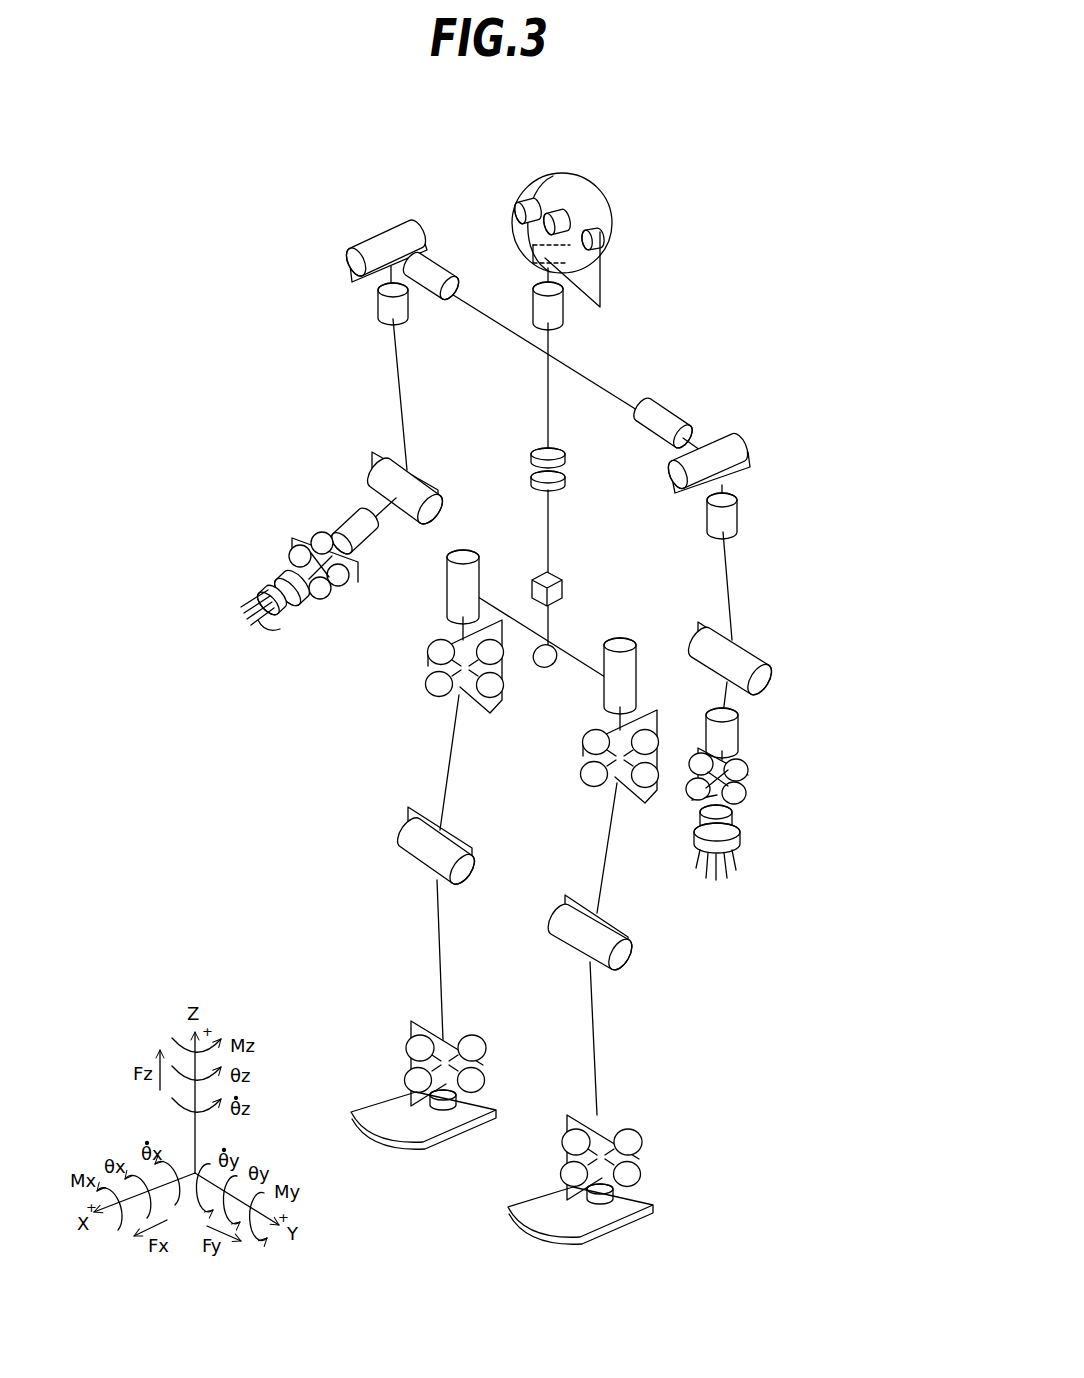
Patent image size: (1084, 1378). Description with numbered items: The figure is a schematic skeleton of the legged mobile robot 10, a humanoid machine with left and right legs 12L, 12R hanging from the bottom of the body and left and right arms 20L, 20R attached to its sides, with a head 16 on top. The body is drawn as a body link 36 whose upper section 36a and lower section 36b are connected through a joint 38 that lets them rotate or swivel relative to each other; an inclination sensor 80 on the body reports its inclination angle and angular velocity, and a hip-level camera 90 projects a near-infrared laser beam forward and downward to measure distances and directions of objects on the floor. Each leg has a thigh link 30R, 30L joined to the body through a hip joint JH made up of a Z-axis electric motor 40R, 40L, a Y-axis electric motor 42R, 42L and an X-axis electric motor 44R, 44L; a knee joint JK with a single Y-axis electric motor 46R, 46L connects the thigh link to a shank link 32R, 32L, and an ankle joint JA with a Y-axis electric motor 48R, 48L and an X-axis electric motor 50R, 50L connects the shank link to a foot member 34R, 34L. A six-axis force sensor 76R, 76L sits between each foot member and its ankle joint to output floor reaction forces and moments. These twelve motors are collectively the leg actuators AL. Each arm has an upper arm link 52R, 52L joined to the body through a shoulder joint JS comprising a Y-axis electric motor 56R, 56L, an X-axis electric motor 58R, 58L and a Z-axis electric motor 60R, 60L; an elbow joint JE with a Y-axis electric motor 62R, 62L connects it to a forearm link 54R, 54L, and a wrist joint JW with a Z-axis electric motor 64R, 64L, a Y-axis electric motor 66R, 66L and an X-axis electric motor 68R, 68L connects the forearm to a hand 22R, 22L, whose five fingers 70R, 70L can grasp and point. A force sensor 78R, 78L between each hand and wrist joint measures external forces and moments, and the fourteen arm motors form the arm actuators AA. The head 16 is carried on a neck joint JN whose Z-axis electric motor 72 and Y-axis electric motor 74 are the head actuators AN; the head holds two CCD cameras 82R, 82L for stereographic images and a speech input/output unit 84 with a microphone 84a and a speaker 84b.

The legged mobile robot 10 is at (690, 345).
The right leg 12R is at (375, 876).
The left leg 12L is at (657, 980).
The head 16 is at (536, 176).
The right arm 20R is at (372, 405).
The left arm 20L is at (758, 612).
The right hand 22R is at (292, 608).
The left hand 22L is at (738, 858).
The right thigh link 30R is at (448, 795).
The left thigh link 30L is at (605, 855).
The right shank link 32R is at (440, 965).
The left shank link 32L is at (598, 1040).
The right foot member 34R is at (403, 1140).
The left foot member 34L is at (570, 1232).
The body link 36 is at (553, 516).
The upper section 36a is at (552, 432).
The lower section 36b is at (552, 560).
The joint 38 is at (568, 470).
The electric motor 40R is at (472, 568).
The electric motor 40L is at (628, 660).
The electric motor 42R is at (440, 647).
The electric motor 42L is at (592, 742).
The electric motor 44R is at (437, 690).
The electric motor 44L is at (590, 772).
The electric motor 46R is at (472, 870).
The electric motor 46L is at (622, 948).
The electric motor 48R is at (480, 1083).
The electric motor 48L is at (640, 1168).
The electric motor 50R is at (470, 1042).
The electric motor 50L is at (628, 1140).
The right upper arm link 52R is at (405, 420).
The left upper arm link 52L is at (731, 575).
The right forearm link 54R is at (378, 500).
The left forearm link 54L is at (730, 696).
The electric motor 56R is at (438, 273).
The electric motor 56L is at (662, 418).
The electric motor 58R is at (365, 242).
The electric motor 58L is at (735, 452).
The electric motor 60R is at (380, 305).
The electric motor 60L is at (735, 515).
The electric motor 62R is at (437, 508).
The electric motor 62L is at (765, 686).
The electric motor 64R is at (366, 536).
The electric motor 64L is at (738, 736).
The electric motor 66R is at (291, 553).
The electric motor 66L is at (746, 796).
The electric motor 68R is at (318, 533).
The electric motor 68L is at (748, 770).
The fingers 70R is at (242, 622).
The fingers 70L is at (738, 880).
The electric motor 72 is at (562, 316).
The electric motor 74 is at (600, 230).
The force sensor 76R is at (455, 1108).
The force sensor 76L is at (614, 1204).
The force sensor 78R is at (280, 580).
The force sensor 78L is at (736, 826).
The inclination sensor 80 is at (566, 586).
The CCD camera 82R is at (516, 206).
The CCD camera 82L is at (562, 210).
The speech input/output unit 84 is at (574, 262).
The microphone 84a is at (572, 276).
The speaker 84b is at (531, 262).
The hip-level camera 90 is at (541, 667).
The neck joint JN is at (622, 238).
The shoulder joint JS is at (341, 258).
The elbow joint JE is at (338, 432).
The wrist joint JW is at (331, 598).
The hip joint JH is at (420, 668).
The knee joint JK is at (380, 822).
The ankle joint JA is at (395, 1032).
The head actuators AN is at (663, 283).
The leg actuators AL is at (656, 722).
The arm actuators AA is at (828, 760).